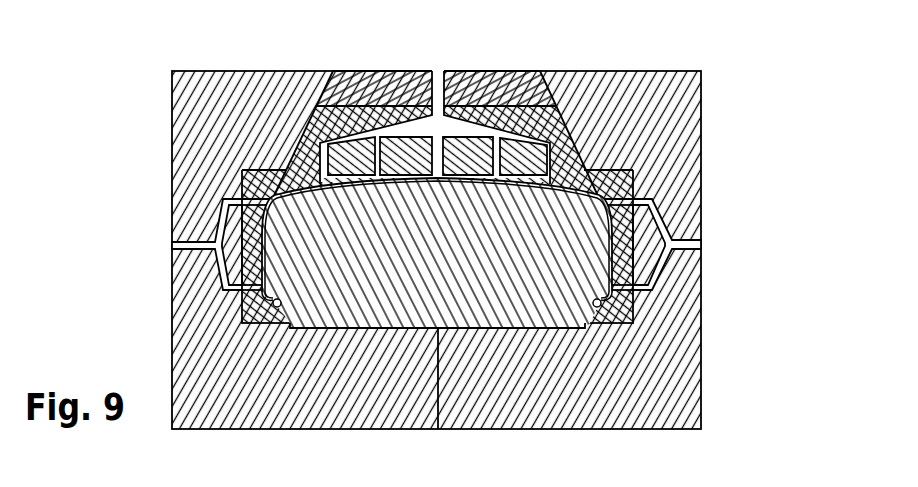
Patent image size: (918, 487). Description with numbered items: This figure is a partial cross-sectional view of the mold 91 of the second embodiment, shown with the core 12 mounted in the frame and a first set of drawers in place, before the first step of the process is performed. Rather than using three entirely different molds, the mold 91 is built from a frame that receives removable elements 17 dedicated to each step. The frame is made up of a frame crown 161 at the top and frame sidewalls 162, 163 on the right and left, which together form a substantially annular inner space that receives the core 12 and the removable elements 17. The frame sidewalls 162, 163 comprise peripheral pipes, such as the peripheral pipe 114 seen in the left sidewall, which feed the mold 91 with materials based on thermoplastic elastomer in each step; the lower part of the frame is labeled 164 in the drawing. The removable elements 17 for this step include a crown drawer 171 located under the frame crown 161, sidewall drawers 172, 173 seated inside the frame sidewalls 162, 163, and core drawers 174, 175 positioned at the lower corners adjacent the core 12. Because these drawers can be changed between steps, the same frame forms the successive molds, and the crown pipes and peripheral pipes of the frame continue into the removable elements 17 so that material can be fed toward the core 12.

The mold 91 is at (742, 86).
The frame crown 161 is at (498, 90).
The frame sidewall 162 is at (680, 127).
The frame sidewall 163 is at (210, 123).
The lower mold part 164 is at (330, 407).
The peripheral pipe 114 is at (191, 242).
The core 12 is at (495, 325).
The removable elements 17 is at (457, 250).
The crown drawer 171 is at (523, 118).
The sidewall drawer 172 is at (623, 306).
The sidewall drawer 173 is at (243, 302).
The core drawer 174 is at (589, 318).
The core drawer 175 is at (282, 308).